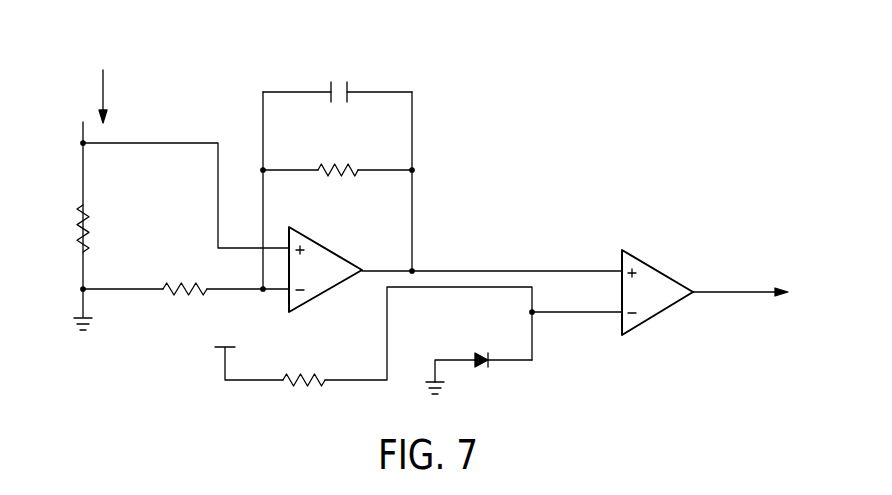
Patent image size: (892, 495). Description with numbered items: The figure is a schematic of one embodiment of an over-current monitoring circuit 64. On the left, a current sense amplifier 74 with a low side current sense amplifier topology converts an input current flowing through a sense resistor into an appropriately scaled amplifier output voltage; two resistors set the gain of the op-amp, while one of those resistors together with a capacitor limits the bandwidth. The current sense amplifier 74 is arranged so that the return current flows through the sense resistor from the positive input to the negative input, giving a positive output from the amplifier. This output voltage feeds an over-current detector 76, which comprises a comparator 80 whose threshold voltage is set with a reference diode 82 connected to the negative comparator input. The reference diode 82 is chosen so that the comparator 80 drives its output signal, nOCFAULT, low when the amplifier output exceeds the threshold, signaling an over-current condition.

The over-current monitoring circuit 64 is at (578, 132).
The current sense amplifier 74 is at (328, 295).
The over-current detector 76 is at (712, 303).
The comparator 80 is at (667, 263).
The reference diode 82 is at (474, 352).